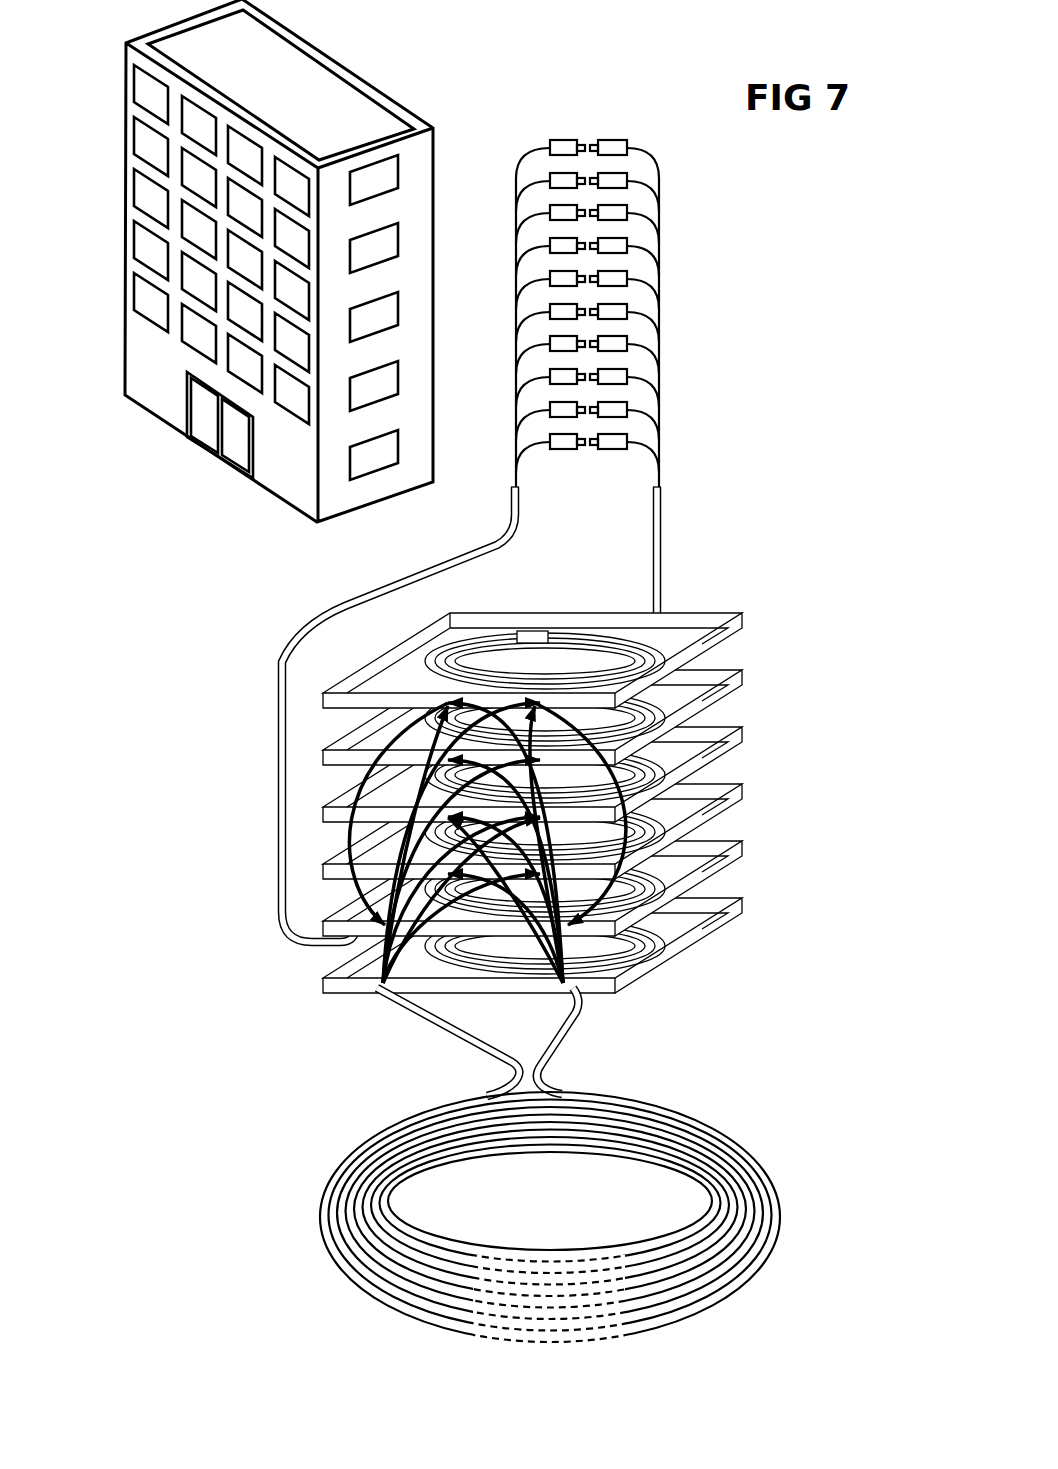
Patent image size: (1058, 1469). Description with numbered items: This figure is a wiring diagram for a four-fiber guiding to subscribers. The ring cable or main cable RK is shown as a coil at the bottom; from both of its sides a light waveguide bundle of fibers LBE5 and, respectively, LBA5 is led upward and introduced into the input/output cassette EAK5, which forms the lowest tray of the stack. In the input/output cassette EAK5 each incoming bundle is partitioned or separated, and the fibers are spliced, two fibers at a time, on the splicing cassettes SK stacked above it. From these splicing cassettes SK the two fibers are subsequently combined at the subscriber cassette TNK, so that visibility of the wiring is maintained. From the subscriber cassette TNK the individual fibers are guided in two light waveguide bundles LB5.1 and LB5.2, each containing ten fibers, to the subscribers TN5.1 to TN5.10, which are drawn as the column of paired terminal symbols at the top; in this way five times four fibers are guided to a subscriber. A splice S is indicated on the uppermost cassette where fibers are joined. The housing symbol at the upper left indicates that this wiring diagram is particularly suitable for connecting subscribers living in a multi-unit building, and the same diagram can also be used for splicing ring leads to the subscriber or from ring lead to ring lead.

The subscriber TN5.1 is at (566, 140).
The subscriber TN5.10 is at (610, 450).
The light waveguide bundle LB5.1 is at (662, 543).
The light waveguide bundle LB5.2 is at (312, 615).
The splice S is at (533, 631).
The splicing cassettes SK is at (745, 620).
The subscriber cassette TNK is at (745, 847).
The input/output cassette EAK5 is at (668, 955).
The incoming light waveguide bundle of fibers LBE5 is at (460, 1028).
The light waveguide bundle of fibers LBA5 is at (557, 1038).
The ring cable or main cable RK is at (780, 1200).